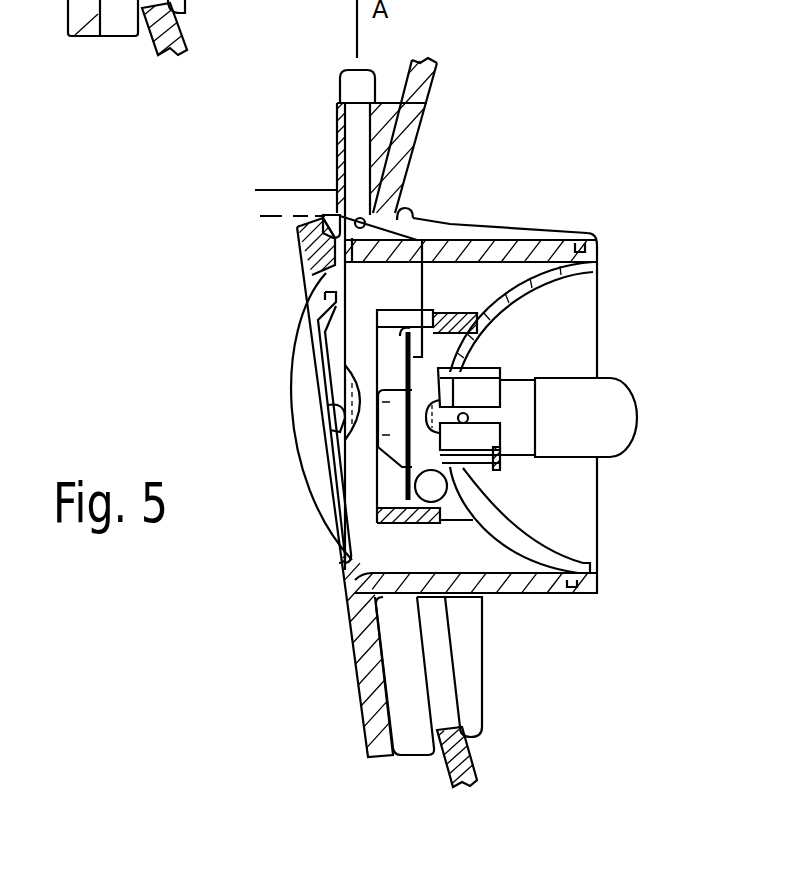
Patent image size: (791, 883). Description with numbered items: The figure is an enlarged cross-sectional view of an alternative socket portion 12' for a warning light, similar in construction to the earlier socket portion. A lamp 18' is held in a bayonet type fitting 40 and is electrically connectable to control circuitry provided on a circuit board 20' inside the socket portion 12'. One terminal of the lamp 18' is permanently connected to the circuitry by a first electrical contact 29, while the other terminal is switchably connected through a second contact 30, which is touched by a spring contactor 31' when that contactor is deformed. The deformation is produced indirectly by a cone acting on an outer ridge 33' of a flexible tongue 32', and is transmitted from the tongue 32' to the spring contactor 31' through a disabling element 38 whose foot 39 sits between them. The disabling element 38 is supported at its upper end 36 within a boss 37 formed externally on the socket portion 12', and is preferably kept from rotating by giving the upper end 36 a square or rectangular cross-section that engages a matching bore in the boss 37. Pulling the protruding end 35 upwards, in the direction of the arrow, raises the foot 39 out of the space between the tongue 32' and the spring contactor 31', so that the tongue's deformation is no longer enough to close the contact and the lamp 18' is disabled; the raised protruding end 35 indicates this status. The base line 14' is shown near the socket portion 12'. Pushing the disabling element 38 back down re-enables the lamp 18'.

The socket portion 12' is at (506, 502).
The mounting base plate 14' is at (231, 188).
The lamp 18' is at (620, 421).
The circuit board 20' is at (521, 317).
The first electrical contact 29 is at (492, 462).
The second contact 30 is at (455, 407).
The spring contactor 31' is at (367, 431).
The flexible tongue 32' is at (270, 427).
The outer ridge 33' is at (281, 416).
The protruding end 35 is at (347, 70).
The upper end 36 is at (340, 120).
The boss 37 is at (338, 140).
The disabling element 38 is at (305, 273).
The foot 39 is at (338, 427).
The bayonet type fitting 40 is at (500, 457).